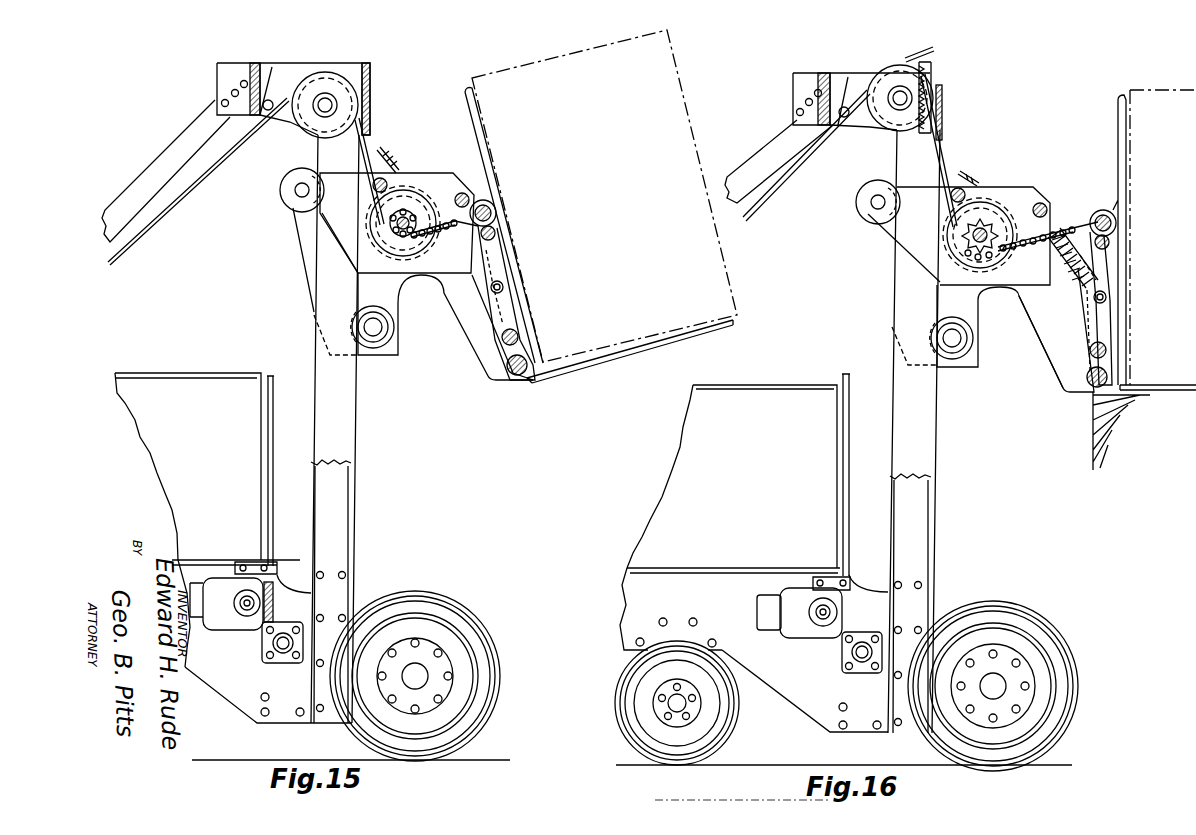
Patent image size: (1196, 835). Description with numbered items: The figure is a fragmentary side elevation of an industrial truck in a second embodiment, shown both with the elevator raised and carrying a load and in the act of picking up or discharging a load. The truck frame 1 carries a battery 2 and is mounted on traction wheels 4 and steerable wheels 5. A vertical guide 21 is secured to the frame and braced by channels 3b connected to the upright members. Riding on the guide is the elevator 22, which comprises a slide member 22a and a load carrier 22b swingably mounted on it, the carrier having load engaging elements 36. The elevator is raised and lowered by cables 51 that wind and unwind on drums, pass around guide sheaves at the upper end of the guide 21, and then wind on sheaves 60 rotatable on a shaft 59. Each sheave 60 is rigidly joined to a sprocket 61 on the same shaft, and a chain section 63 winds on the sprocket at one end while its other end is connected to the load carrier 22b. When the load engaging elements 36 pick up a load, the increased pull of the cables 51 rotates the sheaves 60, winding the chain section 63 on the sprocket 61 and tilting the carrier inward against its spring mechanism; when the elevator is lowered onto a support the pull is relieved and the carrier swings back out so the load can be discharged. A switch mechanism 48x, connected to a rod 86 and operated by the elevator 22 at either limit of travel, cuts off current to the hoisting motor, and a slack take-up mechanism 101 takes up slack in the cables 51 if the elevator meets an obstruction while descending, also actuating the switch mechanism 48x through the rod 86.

In FIG. 15, the truck frame 1 is at (222, 668).
In FIG. 16, the truck frame 1 is at (676, 613).
In FIG. 15, the battery 2 is at (188, 520).
In FIG. 16, the battery 2 is at (732, 476).
In FIG. 15, the channels 3b is at (150, 173).
In FIG. 16, the channels 3b is at (760, 166).
In FIG. 15, the traction wheels 4 is at (492, 639).
In FIG. 16, the traction wheels 4 is at (1020, 613).
In FIG. 16, the steerable wheels 5 is at (737, 726).
In FIG. 15, the vertical guide 21 is at (335, 429).
In FIG. 16, the vertical guide 21 is at (914, 431).
In FIG. 15, the elevator 22 is at (290, 275).
In FIG. 16, the elevator 22 is at (984, 389).
In FIG. 15, the slide member 22a is at (388, 358).
In FIG. 16, the slide member 22a is at (886, 262).
In FIG. 16, the load carrier 22b is at (1077, 304).
In FIG. 15, the load engaging elements 36 is at (578, 368).
In FIG. 16, the load engaging elements 36 is at (1144, 280).
In FIG. 15, the switch mechanism 48x is at (220, 628).
In FIG. 16, the switch mechanism 48x is at (800, 638).
In FIG. 15, the cables 51 is at (168, 214).
In FIG. 16, the cables 51 is at (792, 176).
In FIG. 15, the shaft 59 is at (404, 214).
In FIG. 16, the shaft 59 is at (975, 238).
In FIG. 15, the sheaves 60 is at (420, 197).
In FIG. 16, the sheaves 60 is at (985, 202).
In FIG. 16, the sprocket 61 is at (996, 220).
In FIG. 15, the chain section 63 is at (437, 237).
In FIG. 15, the rod 86 is at (279, 428).
In FIG. 15, the slack take-up mechanism 101 is at (293, 90).
In FIG. 16, the slack take-up mechanism 101 is at (887, 93).